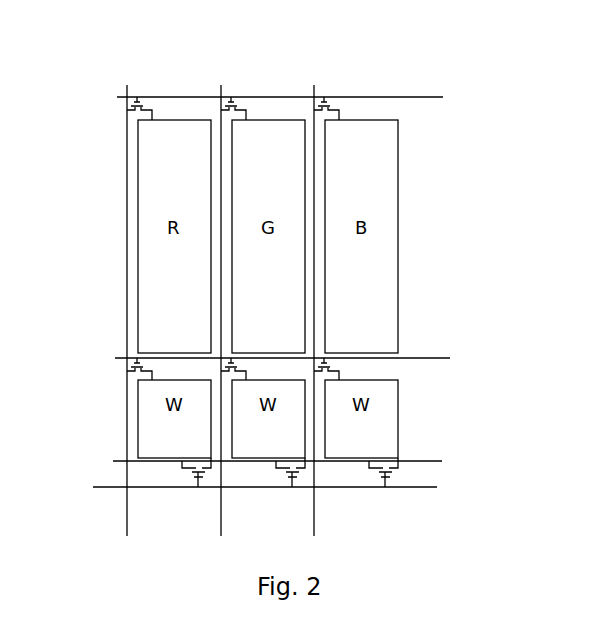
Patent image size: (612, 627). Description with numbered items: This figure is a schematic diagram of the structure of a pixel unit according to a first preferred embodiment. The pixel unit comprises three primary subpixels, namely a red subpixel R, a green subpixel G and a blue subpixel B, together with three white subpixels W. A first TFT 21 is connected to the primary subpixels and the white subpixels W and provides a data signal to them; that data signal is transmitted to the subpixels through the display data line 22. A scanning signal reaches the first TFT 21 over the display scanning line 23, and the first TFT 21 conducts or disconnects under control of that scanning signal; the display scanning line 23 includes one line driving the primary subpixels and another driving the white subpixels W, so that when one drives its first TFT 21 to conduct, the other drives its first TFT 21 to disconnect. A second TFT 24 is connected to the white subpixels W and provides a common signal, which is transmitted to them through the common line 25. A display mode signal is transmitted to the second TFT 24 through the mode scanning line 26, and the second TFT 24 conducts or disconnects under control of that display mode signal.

The first TFT 21 is at (138, 101).
The display data line 22 is at (127, 170).
The display scanning line 23 is at (120, 357).
The second TFT 24 is at (386, 480).
The common line 25 is at (430, 460).
The mode scanning line 26 is at (165, 487).